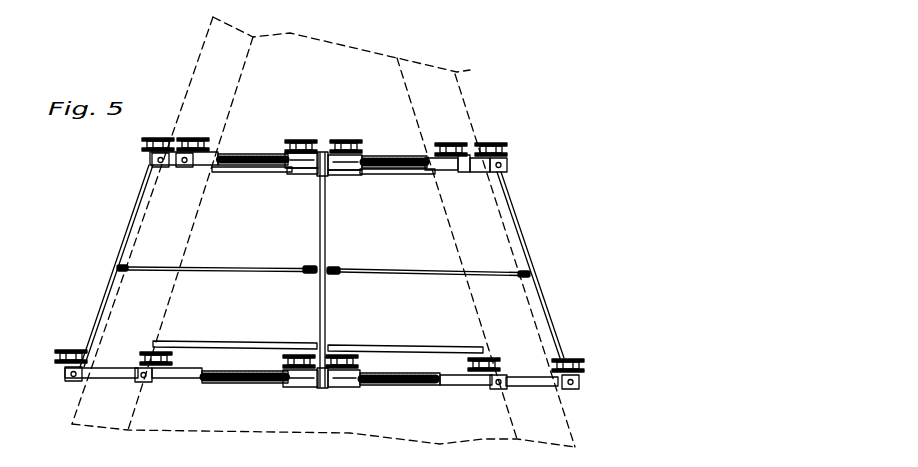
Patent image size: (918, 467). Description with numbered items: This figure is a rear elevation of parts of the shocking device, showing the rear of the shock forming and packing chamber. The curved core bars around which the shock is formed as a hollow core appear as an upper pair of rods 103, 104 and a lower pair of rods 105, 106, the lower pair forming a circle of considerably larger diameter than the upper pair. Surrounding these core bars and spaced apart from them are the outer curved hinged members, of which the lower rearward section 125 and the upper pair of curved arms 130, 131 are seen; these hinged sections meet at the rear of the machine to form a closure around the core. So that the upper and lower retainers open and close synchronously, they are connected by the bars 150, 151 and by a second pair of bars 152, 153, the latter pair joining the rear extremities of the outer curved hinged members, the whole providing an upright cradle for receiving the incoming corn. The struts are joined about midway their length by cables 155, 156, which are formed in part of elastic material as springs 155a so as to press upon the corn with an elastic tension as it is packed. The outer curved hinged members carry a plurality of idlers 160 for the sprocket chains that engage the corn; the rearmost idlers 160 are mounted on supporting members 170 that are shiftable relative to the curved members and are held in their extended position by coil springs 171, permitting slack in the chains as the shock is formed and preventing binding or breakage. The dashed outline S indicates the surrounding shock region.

The screen S is at (323, 232).
The upper curved core bar 103 is at (228, 200).
The upper curved core bar 104 is at (391, 203).
The lower curved core bar 105 is at (166, 328).
The lower curved core bar 106 is at (413, 335).
The curved hinged member 125 is at (511, 415).
The curved arm 130 is at (441, 205).
The curved arm 131 is at (262, 101).
The bar 150 is at (60, 228).
The bar 151 is at (524, 236).
The bar 152 is at (271, 222).
The bar 153 is at (343, 270).
The cable 155 is at (202, 253).
The spring 155a is at (128, 254).
The cable 156 is at (385, 262).
The idler 160 is at (177, 118).
The supporting member 170 is at (348, 210).
The coil spring 171 is at (234, 143).